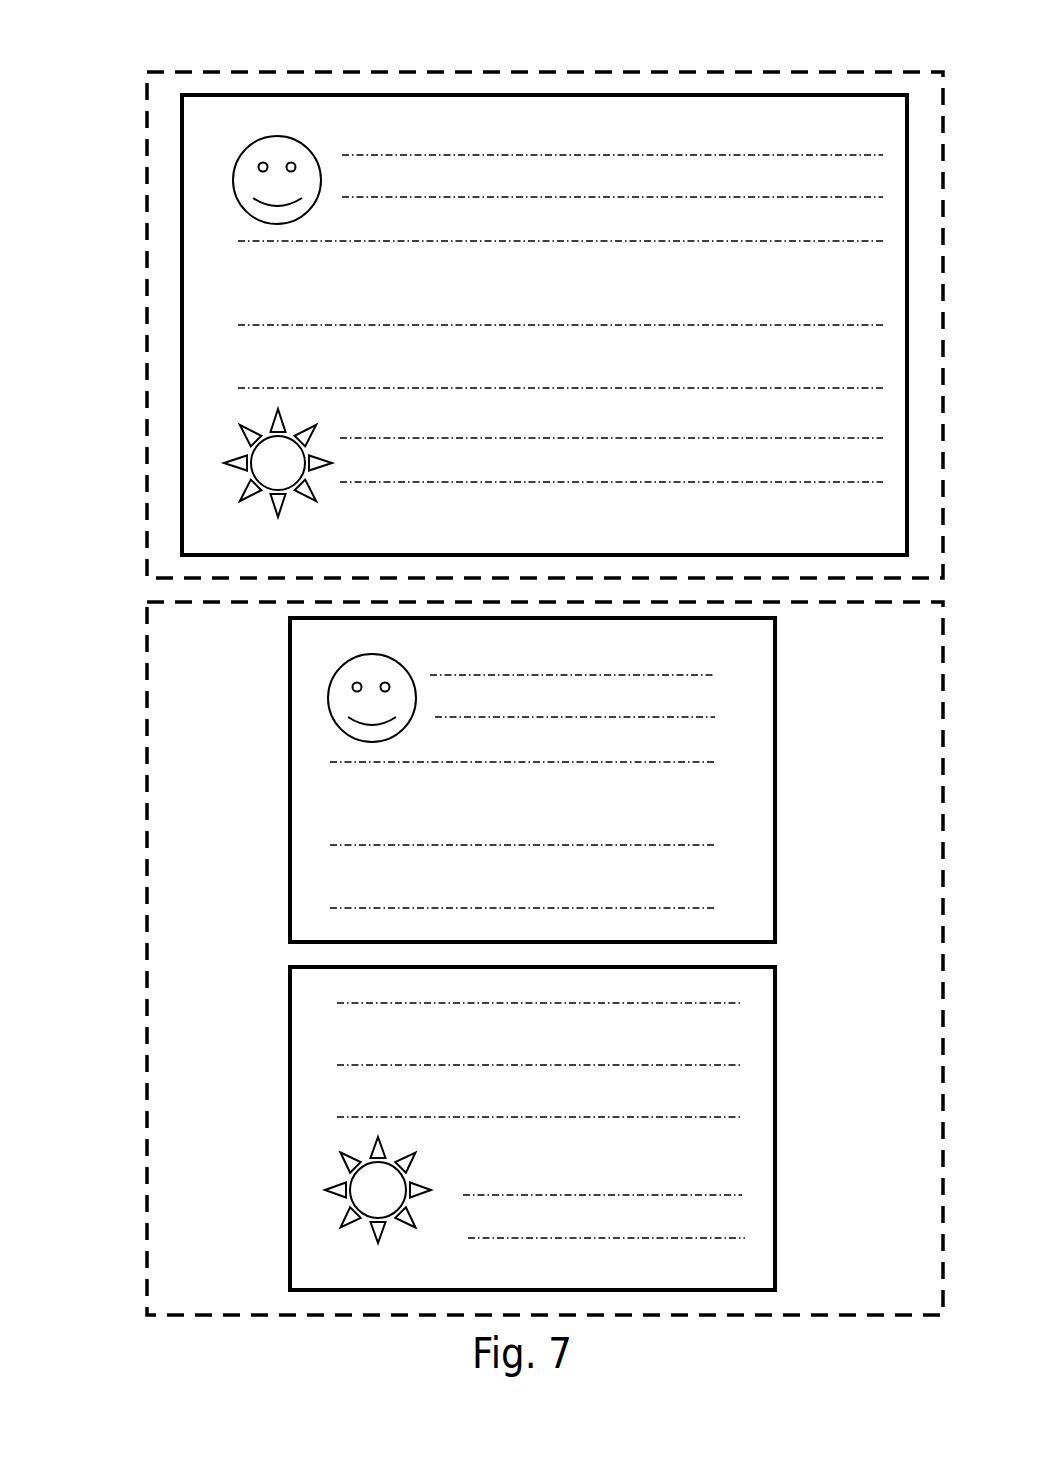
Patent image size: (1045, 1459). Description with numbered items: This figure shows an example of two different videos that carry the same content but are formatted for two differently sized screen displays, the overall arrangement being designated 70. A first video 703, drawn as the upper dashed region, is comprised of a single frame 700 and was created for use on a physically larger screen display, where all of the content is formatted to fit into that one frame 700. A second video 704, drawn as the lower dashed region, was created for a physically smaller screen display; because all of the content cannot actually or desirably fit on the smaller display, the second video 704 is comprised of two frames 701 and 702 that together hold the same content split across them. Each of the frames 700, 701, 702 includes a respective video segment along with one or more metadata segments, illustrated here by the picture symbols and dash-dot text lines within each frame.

The display screen 70 is at (675, 58).
The frame 700 is at (193, 155).
The frame 701 is at (287, 720).
The frame 702 is at (288, 1045).
The video 1 703 is at (145, 367).
The video 2 704 is at (145, 848).